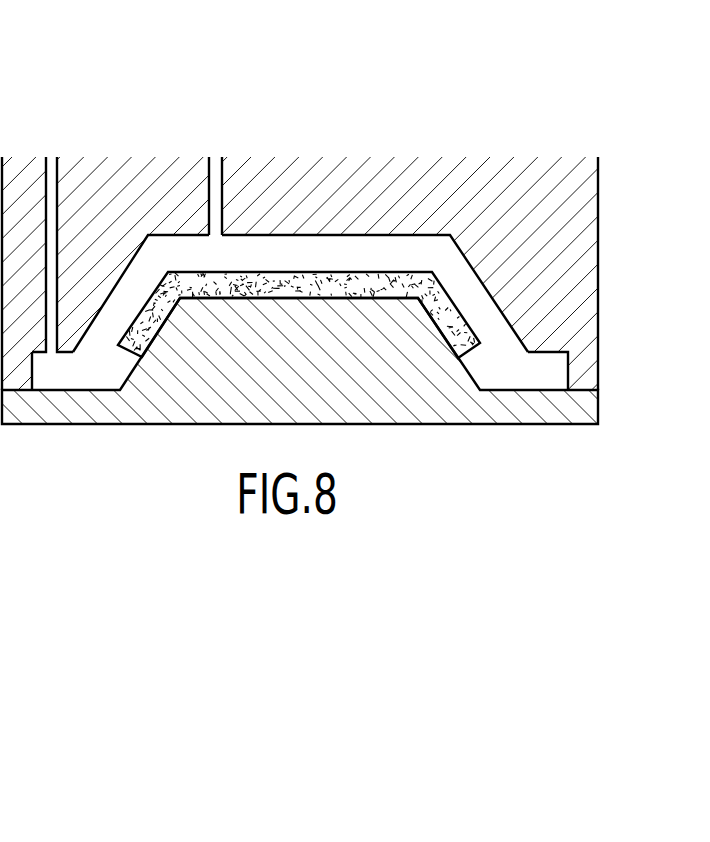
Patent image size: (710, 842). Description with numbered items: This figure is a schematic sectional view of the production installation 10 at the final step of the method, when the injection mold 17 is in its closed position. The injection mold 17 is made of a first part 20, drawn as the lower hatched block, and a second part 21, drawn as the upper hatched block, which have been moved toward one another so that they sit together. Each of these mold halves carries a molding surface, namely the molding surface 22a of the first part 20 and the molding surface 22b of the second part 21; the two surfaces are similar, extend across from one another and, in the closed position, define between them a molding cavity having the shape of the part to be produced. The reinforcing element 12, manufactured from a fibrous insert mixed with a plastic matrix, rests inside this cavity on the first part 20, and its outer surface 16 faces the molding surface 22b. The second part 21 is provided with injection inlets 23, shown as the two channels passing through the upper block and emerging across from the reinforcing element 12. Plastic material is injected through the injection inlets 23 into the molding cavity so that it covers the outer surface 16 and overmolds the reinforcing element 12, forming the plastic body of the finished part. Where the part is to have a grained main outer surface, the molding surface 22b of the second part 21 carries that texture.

The installation 10 is at (343, 276).
The reinforcing element 12 is at (385, 230).
The outer surface 16 is at (310, 278).
The injection mold 17 is at (343, 289).
The first part 20 is at (302, 403).
The second part 21 is at (342, 229).
The molding surface 22a is at (494, 392).
The molding surface 22b is at (357, 237).
The injection inlet 23 is at (133, 210).